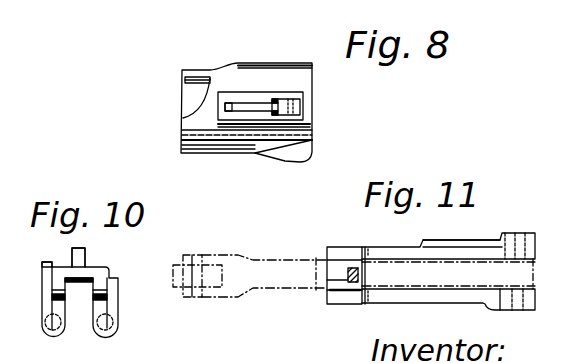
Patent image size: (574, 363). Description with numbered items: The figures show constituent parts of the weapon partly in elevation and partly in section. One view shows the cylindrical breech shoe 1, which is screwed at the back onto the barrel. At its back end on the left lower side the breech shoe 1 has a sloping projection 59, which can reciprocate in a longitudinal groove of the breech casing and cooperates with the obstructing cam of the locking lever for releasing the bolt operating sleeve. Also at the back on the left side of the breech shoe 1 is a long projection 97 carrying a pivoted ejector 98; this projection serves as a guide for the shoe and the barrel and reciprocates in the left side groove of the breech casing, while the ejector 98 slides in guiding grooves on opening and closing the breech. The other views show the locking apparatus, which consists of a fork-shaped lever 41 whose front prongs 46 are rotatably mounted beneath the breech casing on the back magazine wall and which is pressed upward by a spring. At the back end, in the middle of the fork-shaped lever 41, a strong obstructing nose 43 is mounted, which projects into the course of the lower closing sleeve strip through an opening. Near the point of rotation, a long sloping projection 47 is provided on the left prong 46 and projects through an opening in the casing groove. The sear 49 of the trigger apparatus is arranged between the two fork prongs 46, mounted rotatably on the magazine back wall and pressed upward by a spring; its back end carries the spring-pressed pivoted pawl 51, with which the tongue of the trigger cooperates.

In FIG. 8, the breech shoe 1 is at (192, 143).
In FIG. 8, the long projection 97 is at (223, 92).
In FIG. 8, the ejector 98 is at (252, 107).
In FIG. 8, the sloping projection 59 is at (288, 152).
In FIG. 10, the fork-shaped lever 41 is at (82, 285).
In FIG. 11, the fork-shaped lever 41 is at (352, 295).
In FIG. 10, the obstructing nose 43 is at (84, 262).
In FIG. 11, the obstructing nose 43 is at (340, 273).
In FIG. 10, the front prongs 46 is at (57, 292).
In FIG. 11, the front prongs 46 is at (427, 250).
In FIG. 10, the sloping projection 47 is at (45, 266).
In FIG. 11, the sloping projection 47 is at (457, 243).
In FIG. 11, the sear 49 is at (280, 260).
In FIG. 11, the pawl 51 is at (208, 270).